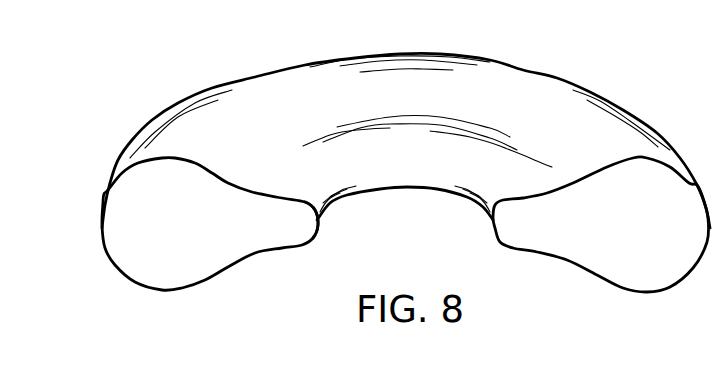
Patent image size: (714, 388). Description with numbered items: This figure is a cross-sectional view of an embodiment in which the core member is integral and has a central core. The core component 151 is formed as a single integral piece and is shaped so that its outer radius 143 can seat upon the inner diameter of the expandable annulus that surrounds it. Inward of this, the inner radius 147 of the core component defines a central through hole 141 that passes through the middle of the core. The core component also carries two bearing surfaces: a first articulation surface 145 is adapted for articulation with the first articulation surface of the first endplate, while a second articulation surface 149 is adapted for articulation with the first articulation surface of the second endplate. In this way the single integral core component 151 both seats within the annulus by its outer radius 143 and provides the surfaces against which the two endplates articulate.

The core component 151 is at (127, 47).
The central through hole 141 is at (424, 228).
The outer radius 143 is at (101, 233).
The first articulation surface 145 is at (518, 78).
The inner radius 147 is at (317, 236).
The second articulation surface 149 is at (573, 265).